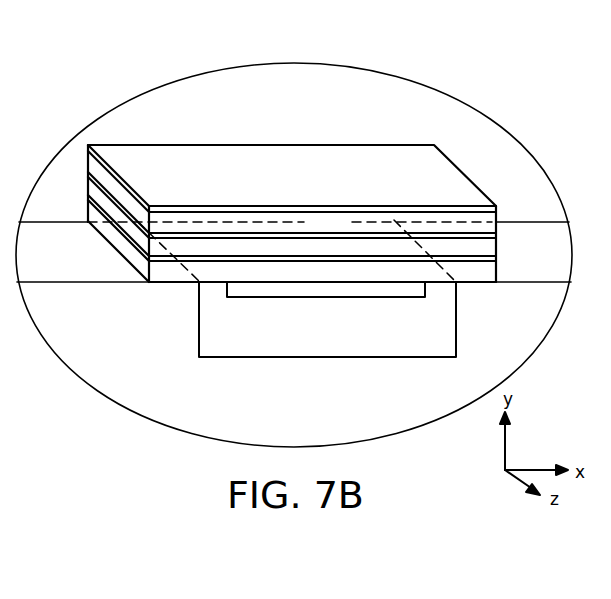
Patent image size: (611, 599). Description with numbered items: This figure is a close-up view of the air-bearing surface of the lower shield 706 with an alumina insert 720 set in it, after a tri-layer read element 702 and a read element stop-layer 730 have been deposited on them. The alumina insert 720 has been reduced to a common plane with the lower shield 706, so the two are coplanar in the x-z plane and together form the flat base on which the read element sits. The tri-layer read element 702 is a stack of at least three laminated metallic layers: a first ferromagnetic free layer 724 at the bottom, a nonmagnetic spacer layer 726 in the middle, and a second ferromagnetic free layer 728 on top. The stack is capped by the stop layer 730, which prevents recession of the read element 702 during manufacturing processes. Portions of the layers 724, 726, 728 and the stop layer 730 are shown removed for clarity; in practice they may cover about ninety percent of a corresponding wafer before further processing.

The tri-layer read element 702 is at (410, 127).
The lower shield 706 is at (343, 334).
The alumina insert 720 is at (347, 299).
The first ferromagnetic free layer 724 is at (343, 280).
The nonmagnetic spacer layer 726 is at (343, 256).
The second ferromagnetic free layer 728 is at (343, 232).
The read element stop-layer 730 is at (343, 190).